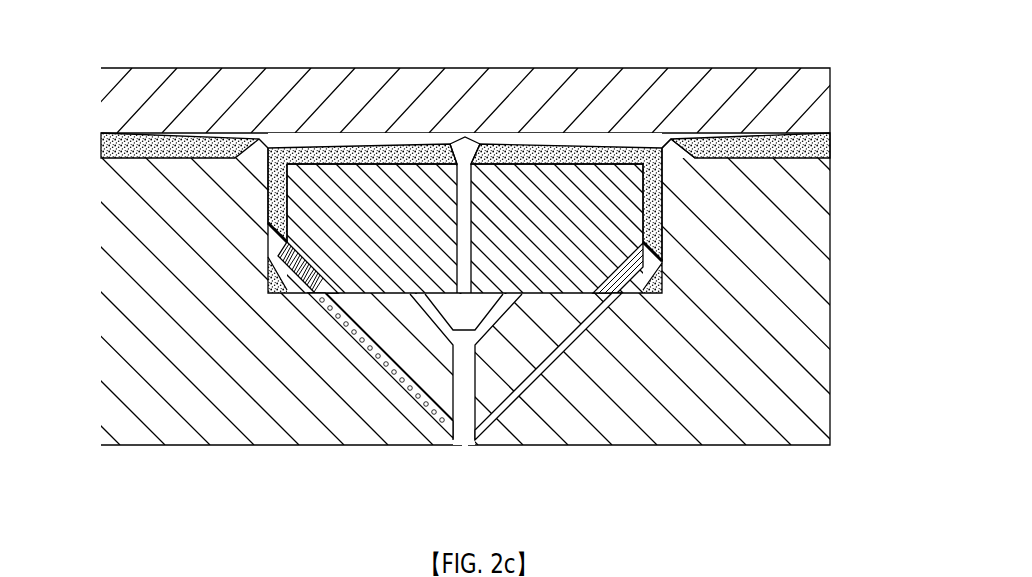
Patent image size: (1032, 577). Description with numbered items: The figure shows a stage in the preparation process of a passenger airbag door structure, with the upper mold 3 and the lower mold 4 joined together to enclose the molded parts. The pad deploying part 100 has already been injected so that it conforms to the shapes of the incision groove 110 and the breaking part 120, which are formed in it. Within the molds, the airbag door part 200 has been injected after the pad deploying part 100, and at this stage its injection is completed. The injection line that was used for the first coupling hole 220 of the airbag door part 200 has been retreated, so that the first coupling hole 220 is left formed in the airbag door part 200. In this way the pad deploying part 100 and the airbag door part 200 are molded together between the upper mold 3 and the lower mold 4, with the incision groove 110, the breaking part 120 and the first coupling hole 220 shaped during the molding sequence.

The upper mold 3 is at (118, 104).
The lower mold 4 is at (118, 289).
The pad deploying part 100 is at (638, 112).
The incision groove 110 is at (458, 133).
The breaking part 120 is at (681, 150).
The airbag door part 200 is at (242, 198).
The first coupling hole 220 is at (656, 250).